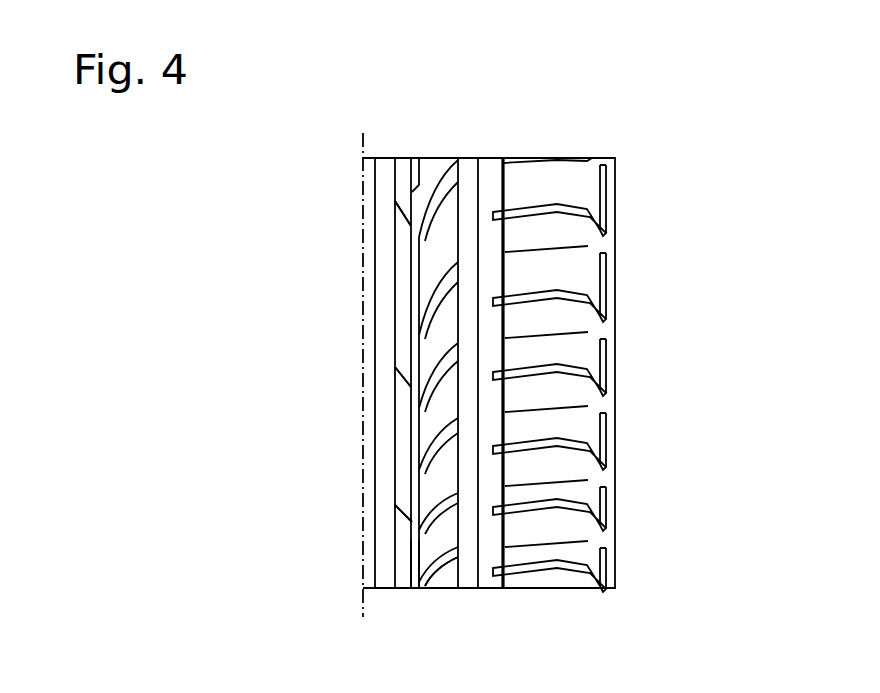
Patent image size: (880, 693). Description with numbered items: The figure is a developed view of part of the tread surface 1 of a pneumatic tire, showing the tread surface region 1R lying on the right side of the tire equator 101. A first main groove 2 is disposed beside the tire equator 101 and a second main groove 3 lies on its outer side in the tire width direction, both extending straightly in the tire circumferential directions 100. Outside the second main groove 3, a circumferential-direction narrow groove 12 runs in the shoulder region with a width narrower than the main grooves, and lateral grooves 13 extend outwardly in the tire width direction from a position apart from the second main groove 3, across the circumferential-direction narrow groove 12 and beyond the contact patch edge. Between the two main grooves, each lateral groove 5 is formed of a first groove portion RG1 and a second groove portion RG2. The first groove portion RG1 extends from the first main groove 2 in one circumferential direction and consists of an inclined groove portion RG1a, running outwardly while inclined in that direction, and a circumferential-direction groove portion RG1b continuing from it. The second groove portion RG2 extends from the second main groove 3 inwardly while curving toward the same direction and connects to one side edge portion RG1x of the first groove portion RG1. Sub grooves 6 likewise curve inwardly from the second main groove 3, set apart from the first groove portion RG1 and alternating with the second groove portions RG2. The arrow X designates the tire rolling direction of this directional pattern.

The tread surface 1 is at (428, 154).
The tread surface region 1R is at (501, 153).
The first main groove 2 is at (388, 158).
The second main groove 3 is at (478, 158).
The lateral groove 5 is at (403, 412).
The sub groove 6 is at (456, 350).
The circumferential-direction narrow groove 12 is at (506, 588).
The lateral groove 13 is at (568, 572).
The tire circumferential directions 100 is at (706, 329).
The tire equator 101 is at (360, 360).
The first groove portion RG1 is at (404, 457).
The inclined groove portion RG1a is at (398, 381).
The circumferential-direction groove portion RG1b is at (418, 573).
The side edge portion RG1x is at (412, 472).
The second groove portion RG2 is at (460, 560).
The arrow X is at (669, 193).